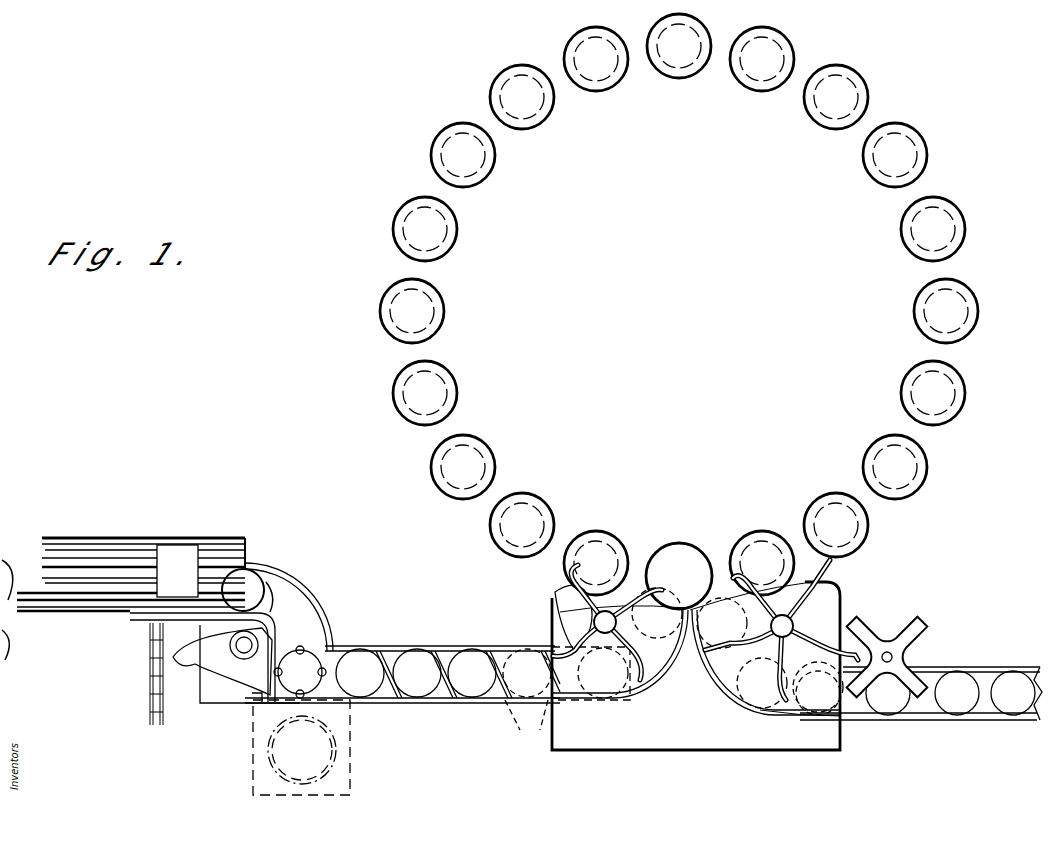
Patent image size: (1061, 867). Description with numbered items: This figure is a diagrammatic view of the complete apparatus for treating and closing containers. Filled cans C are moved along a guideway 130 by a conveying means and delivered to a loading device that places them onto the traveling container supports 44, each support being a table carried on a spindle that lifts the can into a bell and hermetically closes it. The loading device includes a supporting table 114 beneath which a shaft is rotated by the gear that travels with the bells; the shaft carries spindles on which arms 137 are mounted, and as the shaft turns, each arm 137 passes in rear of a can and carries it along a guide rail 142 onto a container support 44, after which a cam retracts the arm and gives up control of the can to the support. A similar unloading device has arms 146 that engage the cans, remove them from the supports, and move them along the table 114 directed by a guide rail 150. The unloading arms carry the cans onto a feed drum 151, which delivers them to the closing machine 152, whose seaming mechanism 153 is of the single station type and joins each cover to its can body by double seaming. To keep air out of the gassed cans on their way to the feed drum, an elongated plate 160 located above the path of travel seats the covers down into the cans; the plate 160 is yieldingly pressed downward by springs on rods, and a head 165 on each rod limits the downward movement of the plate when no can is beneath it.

The container support 44 is at (497, 157).
The filled cans C is at (545, 112).
The supporting table 114 is at (618, 744).
The guideway 130 is at (985, 701).
The arm 137 is at (858, 572).
The guide rail 142 is at (737, 706).
The arm 146 is at (570, 573).
The guide rail 150 is at (654, 695).
The feed drum 151 is at (443, 688).
The closing machine 152 is at (250, 712).
The seaming mechanism 153 is at (311, 661).
The plate 160 is at (538, 720).
The head 165 is at (591, 673).